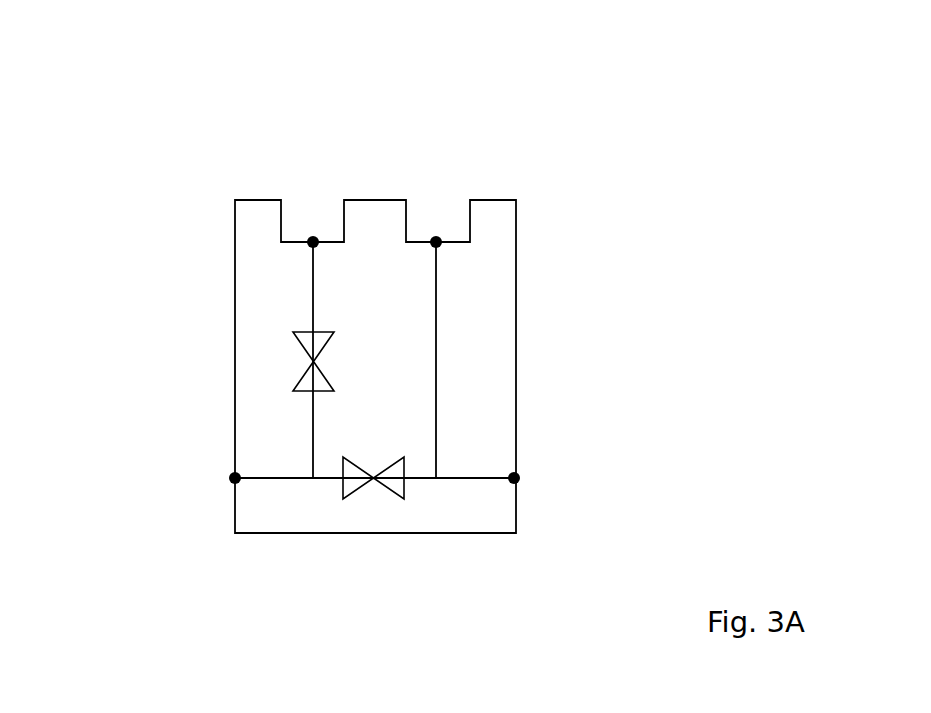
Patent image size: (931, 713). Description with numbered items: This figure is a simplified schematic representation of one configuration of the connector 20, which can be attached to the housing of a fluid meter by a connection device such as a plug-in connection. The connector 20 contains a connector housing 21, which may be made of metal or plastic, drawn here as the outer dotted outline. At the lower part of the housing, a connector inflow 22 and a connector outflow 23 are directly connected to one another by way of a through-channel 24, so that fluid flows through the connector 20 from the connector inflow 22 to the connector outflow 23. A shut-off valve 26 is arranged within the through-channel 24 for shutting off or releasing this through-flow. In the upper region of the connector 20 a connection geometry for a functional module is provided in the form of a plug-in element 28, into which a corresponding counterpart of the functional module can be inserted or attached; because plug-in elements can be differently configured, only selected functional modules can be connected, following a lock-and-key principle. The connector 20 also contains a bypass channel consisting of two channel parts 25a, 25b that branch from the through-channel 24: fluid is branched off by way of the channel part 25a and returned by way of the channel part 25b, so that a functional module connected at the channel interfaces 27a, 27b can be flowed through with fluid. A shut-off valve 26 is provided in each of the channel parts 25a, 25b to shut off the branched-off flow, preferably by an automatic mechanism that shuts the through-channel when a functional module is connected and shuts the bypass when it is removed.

The connector 20 is at (393, 43).
The connector housing 21 is at (516, 307).
The connector inflow 22 is at (235, 478).
The connector outflow 23 is at (514, 478).
The through-channel 24 is at (281, 480).
The channel part 25a is at (313, 435).
The channel part 25b is at (436, 413).
The shut-off valve 26 is at (307, 338).
The channel interface 27a is at (313, 242).
The channel interface 27b is at (436, 242).
The plug-in element 28 is at (368, 165).